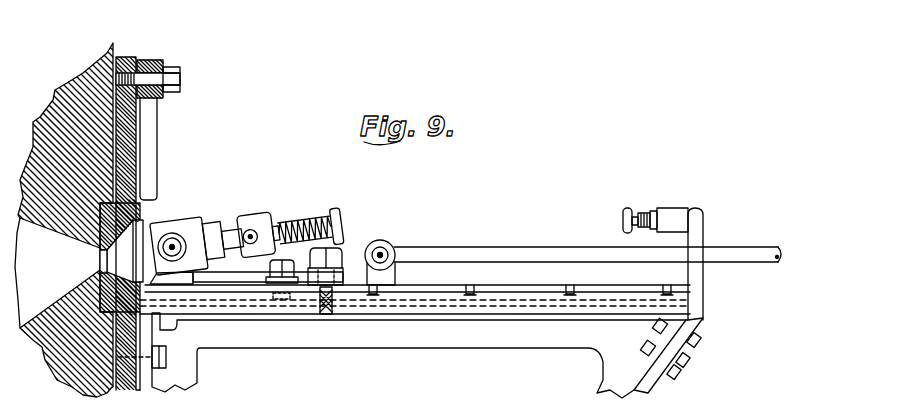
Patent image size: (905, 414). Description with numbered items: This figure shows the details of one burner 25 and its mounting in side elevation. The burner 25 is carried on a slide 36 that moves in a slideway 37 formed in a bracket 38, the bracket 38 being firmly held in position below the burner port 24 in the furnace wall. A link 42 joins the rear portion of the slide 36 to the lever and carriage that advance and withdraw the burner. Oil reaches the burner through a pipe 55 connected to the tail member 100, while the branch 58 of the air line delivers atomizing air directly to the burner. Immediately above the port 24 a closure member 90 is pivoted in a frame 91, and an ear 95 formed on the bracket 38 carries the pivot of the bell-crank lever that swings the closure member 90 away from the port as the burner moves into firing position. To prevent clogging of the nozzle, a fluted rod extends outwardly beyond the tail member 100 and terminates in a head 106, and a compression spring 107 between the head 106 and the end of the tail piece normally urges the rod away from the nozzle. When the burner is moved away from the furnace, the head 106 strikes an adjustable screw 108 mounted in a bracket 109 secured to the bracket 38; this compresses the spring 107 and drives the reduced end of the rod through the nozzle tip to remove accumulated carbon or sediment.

The burner port 24 is at (79, 220).
The burner 25 is at (159, 216).
The slide 36 is at (363, 268).
The slideway 37 is at (226, 298).
The bracket 38 is at (604, 378).
The link 42 is at (458, 258).
The pipe 55 is at (251, 234).
The branch 58 is at (172, 243).
The closure member 90 is at (158, 132).
The frame 91 is at (126, 57).
The ear 95 is at (281, 303).
The tail member 100 is at (242, 227).
The head 106 is at (334, 214).
The compression spring 107 is at (295, 222).
The adjustable screw 108 is at (627, 212).
The bracket 109 is at (696, 214).